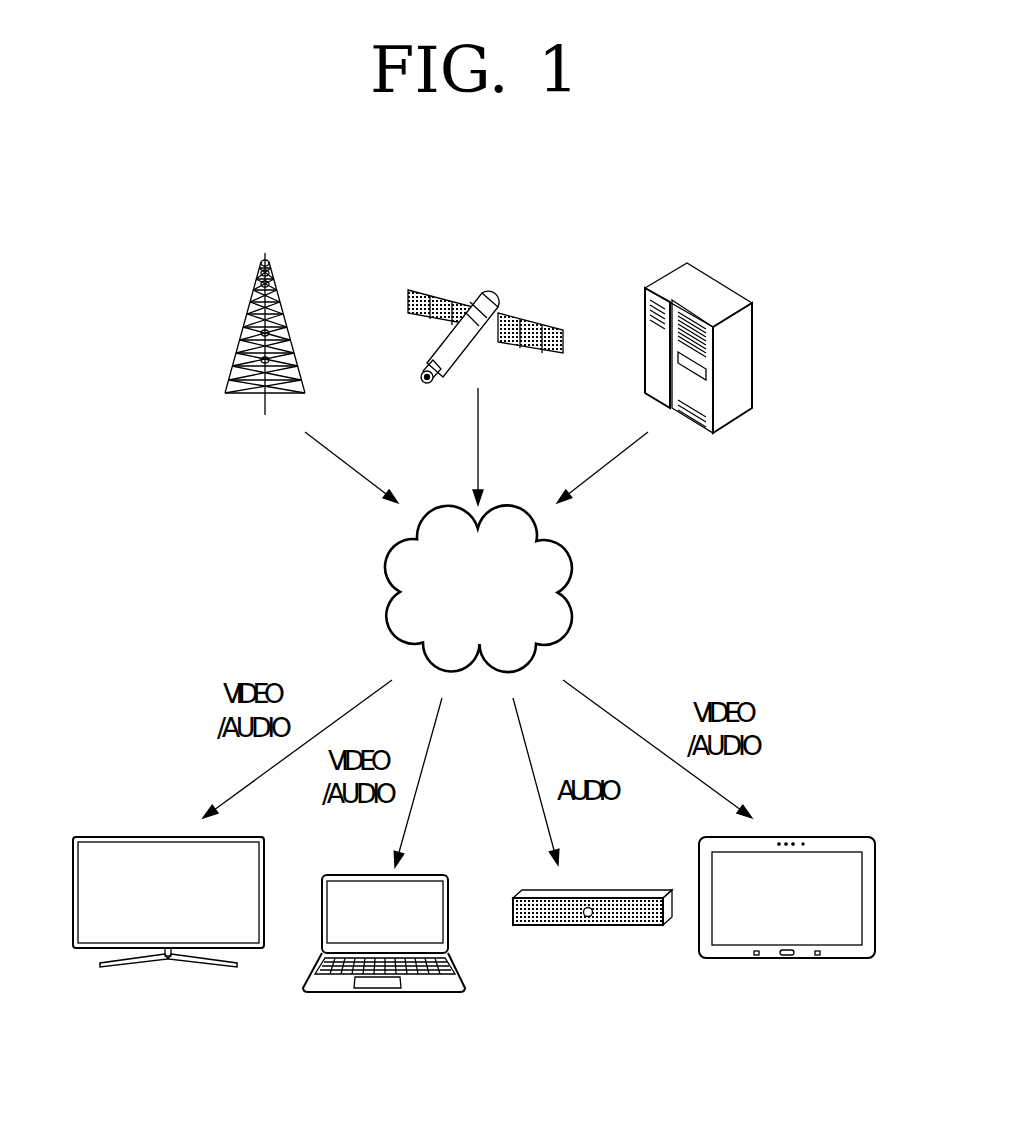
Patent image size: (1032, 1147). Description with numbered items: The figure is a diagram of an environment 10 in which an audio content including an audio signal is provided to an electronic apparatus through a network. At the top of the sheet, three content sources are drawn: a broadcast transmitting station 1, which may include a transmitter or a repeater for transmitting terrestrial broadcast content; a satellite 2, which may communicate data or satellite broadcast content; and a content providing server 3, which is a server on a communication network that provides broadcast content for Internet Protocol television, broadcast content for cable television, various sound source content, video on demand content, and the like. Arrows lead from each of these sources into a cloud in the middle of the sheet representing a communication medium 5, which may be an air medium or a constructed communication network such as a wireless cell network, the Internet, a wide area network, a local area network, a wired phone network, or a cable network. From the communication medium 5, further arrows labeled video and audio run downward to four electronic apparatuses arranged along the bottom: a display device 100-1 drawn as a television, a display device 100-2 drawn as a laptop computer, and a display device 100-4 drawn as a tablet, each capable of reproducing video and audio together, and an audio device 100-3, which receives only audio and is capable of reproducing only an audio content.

The content providing system 10 is at (493, 171).
The broadcast transmitting station 1 is at (272, 266).
The satellite 2 is at (487, 302).
The content providing server 3 is at (666, 276).
The communication medium 5 is at (510, 507).
The display device 100-1 is at (250, 948).
The display device 100-2 is at (375, 992).
The audio device 100-3 is at (588, 925).
The display device 100-4 is at (733, 958).